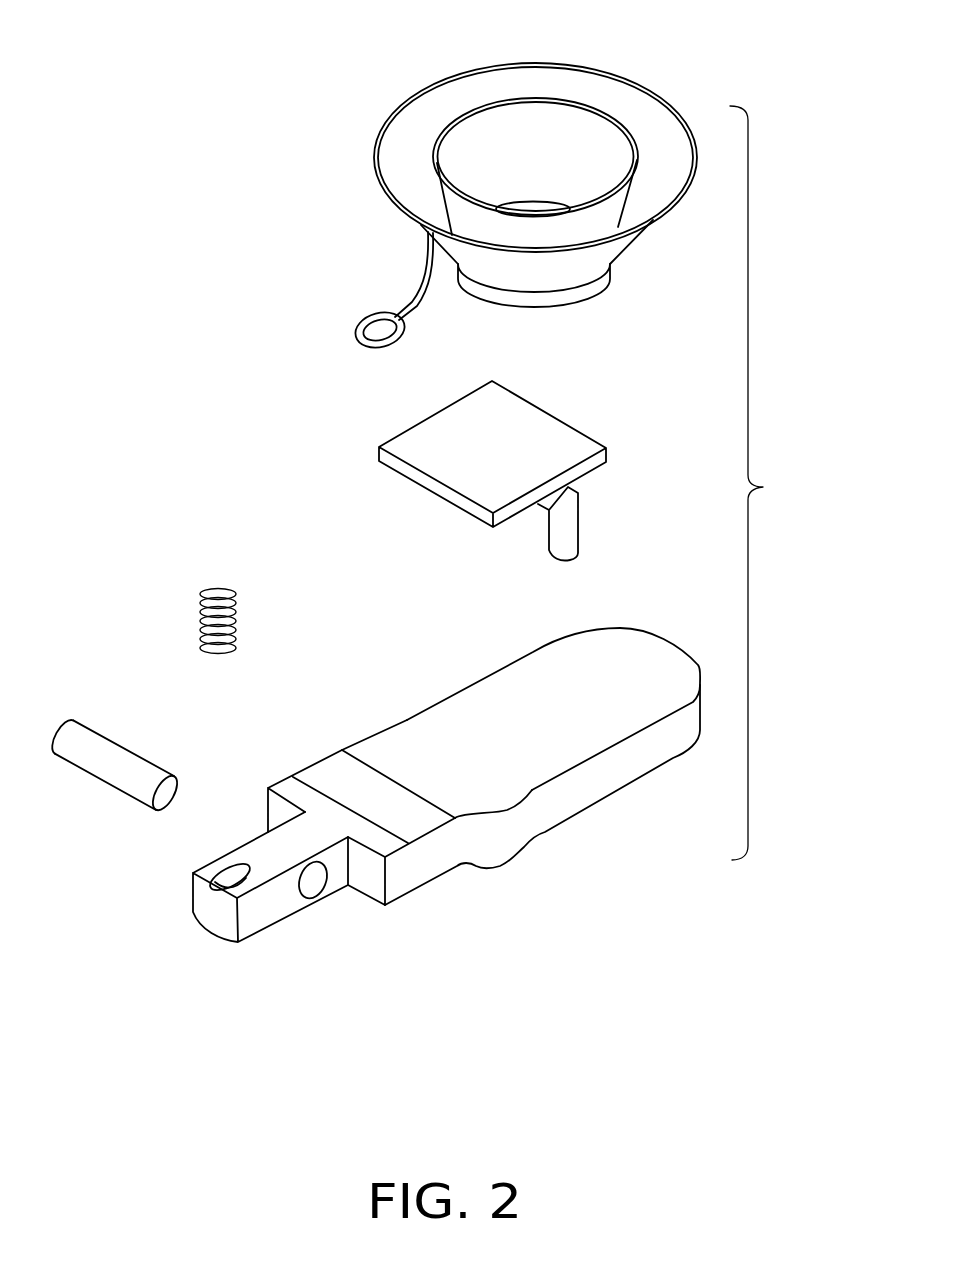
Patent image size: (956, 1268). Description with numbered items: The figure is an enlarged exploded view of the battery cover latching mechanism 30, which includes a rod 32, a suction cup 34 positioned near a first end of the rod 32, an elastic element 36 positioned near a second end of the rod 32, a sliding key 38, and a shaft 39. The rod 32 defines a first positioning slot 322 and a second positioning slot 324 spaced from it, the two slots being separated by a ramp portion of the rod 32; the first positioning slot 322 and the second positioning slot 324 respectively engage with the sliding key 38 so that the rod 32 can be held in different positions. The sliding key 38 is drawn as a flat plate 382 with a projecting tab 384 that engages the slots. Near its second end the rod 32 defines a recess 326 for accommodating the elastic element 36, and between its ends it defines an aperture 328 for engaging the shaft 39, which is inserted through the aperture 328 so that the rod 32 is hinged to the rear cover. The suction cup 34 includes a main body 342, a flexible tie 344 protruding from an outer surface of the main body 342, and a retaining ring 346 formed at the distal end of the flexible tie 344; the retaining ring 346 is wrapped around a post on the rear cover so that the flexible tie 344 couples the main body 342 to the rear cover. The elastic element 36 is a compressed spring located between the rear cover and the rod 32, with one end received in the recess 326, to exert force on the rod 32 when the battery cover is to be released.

The battery cover latching mechanism 30 is at (771, 483).
The rod 32 is at (443, 664).
The first positioning slot 322 is at (337, 777).
The second positioning slot 324 is at (412, 762).
The recess 326 is at (230, 878).
The aperture 328 is at (315, 883).
The suction cup 34 is at (368, 105).
The main body 342 is at (468, 72).
The flexible tie 344 is at (425, 293).
The retaining ring 346 is at (357, 327).
The elastic element 36 is at (212, 618).
The sliding key 38 is at (559, 389).
The plate portion of cover 382 is at (447, 448).
The tab of cover 384 is at (532, 530).
The shaft 39 is at (97, 752).